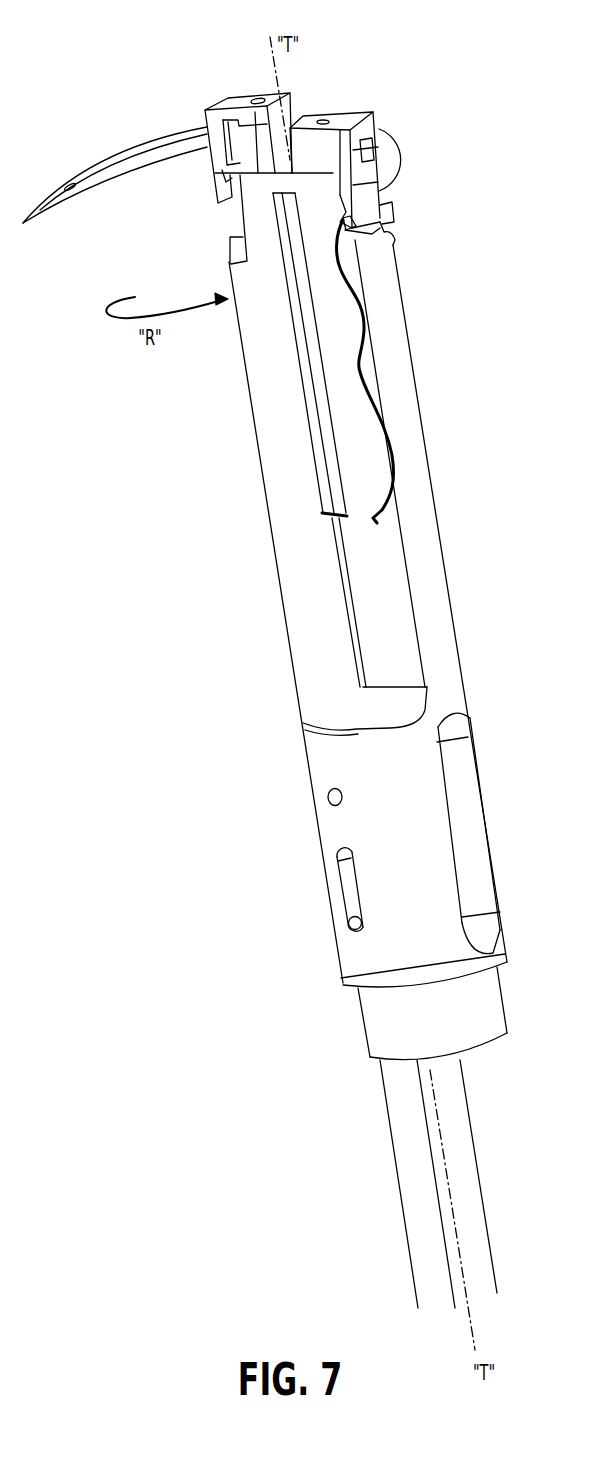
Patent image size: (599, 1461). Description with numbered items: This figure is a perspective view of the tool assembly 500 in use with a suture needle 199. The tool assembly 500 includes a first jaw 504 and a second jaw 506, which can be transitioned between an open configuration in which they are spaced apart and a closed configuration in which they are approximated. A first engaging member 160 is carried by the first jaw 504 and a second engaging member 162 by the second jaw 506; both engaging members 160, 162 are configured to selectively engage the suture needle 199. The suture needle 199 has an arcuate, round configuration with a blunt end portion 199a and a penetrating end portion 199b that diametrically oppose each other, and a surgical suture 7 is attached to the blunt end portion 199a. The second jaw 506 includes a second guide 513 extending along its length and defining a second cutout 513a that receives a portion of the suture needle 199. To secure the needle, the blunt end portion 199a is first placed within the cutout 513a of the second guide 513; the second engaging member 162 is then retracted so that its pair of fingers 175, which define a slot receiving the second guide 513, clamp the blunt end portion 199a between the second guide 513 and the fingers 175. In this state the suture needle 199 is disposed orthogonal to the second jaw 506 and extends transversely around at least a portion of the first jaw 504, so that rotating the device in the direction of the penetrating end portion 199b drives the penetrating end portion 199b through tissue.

The first engaging member 160 is at (230, 100).
The second engaging member 162 is at (347, 118).
The fingers 175 is at (373, 148).
The suture needle 199 is at (392, 150).
The blunt end portion 199a is at (362, 236).
The penetrating end portion 199b is at (47, 208).
The second guide 513 is at (378, 224).
The second cutout 513a is at (372, 207).
The tool assembly 500 is at (440, 368).
The first jaw 504 is at (297, 603).
The second jaw 506 is at (440, 553).
The surgical suture 7 is at (390, 440).